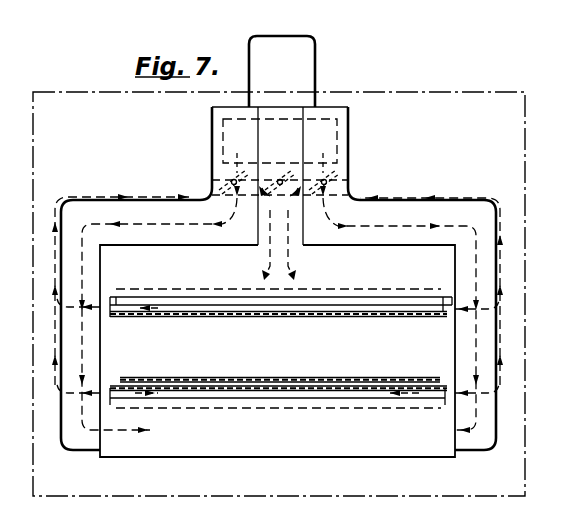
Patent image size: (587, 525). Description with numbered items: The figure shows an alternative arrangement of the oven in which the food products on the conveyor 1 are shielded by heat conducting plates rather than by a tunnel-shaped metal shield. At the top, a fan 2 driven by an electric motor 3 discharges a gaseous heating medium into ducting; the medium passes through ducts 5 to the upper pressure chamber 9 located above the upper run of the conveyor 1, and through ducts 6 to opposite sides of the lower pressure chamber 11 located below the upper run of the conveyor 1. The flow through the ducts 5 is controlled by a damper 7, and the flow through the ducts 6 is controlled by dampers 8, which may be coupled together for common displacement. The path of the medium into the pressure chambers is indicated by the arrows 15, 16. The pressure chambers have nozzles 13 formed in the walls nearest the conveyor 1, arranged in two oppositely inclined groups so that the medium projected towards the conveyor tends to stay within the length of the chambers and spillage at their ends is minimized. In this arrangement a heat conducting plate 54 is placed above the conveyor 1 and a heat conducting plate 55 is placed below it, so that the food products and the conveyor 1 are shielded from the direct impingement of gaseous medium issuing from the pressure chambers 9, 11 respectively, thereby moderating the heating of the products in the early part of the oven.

The conveyor 1 is at (285, 378).
The fan 2 is at (325, 118).
The electric motor 3 is at (296, 72).
The ducts 5 is at (310, 228).
The ducts 6 is at (418, 212).
The damper 7 is at (292, 167).
The dampers 8 is at (226, 170).
The upper pressure chamber 9 is at (442, 266).
The lower pressure chamber 11 is at (268, 443).
The nozzles 13 is at (203, 398).
The arrows 15 is at (267, 262).
The arrows 16 is at (236, 208).
The heat conducting plate 54 is at (157, 316).
The heat conducting plate 55 is at (183, 391).